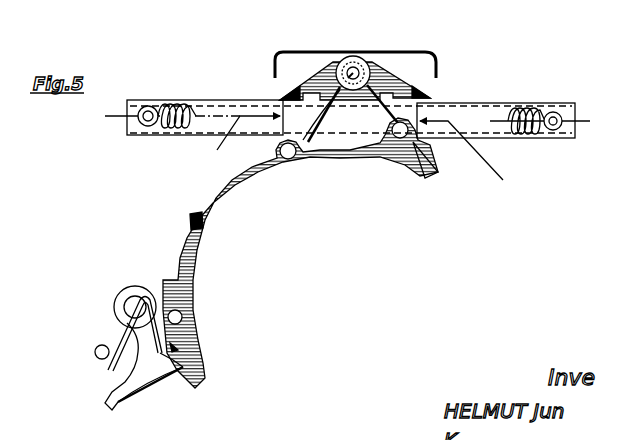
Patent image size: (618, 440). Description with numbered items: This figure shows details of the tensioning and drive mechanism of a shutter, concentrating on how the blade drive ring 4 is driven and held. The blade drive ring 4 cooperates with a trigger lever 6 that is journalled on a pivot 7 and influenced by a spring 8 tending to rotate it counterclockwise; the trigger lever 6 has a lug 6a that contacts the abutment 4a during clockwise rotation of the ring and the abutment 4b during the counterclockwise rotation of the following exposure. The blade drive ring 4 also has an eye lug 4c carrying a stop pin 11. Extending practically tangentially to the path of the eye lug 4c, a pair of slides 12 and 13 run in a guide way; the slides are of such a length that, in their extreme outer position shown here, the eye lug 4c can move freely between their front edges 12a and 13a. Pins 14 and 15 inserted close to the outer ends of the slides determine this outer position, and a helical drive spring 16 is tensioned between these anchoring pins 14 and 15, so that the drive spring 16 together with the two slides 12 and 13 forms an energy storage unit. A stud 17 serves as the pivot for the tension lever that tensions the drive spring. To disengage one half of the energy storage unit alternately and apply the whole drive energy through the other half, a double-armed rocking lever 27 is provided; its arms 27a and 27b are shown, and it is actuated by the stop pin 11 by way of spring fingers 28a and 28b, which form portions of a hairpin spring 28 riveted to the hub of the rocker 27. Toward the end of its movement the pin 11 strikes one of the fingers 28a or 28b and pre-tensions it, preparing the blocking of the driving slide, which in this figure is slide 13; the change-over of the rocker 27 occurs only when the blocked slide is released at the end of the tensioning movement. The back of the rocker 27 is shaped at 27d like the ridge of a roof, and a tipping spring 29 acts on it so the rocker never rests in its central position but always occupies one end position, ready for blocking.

The blade drive ring 4 is at (208, 247).
The abutment 4a is at (159, 241).
The abutment 4b is at (181, 335).
The eye lug 4c is at (425, 162).
The trigger lever 6 is at (110, 388).
The lug 6a is at (207, 365).
The pivot 7 is at (133, 307).
The spring 8 is at (112, 343).
The stop pin 11 is at (402, 138).
The slide 12 is at (137, 106).
The front edge 12a is at (239, 142).
The slide 13 is at (560, 135).
The front edge 13a is at (476, 158).
The pin 14 is at (145, 122).
The pin 15 is at (558, 116).
The helical drive spring 16 is at (172, 128).
The stud 17 is at (354, 73).
The rocking lever 27 is at (316, 82).
The rocker left arm 27a is at (270, 99).
The rocker right arm 27b is at (437, 97).
The roof-ridge back 27d is at (355, 58).
The hairpin spring 28 is at (330, 95).
The spring finger 28a is at (311, 140).
The spring finger 28b is at (388, 142).
The tipping spring 29 is at (278, 56).